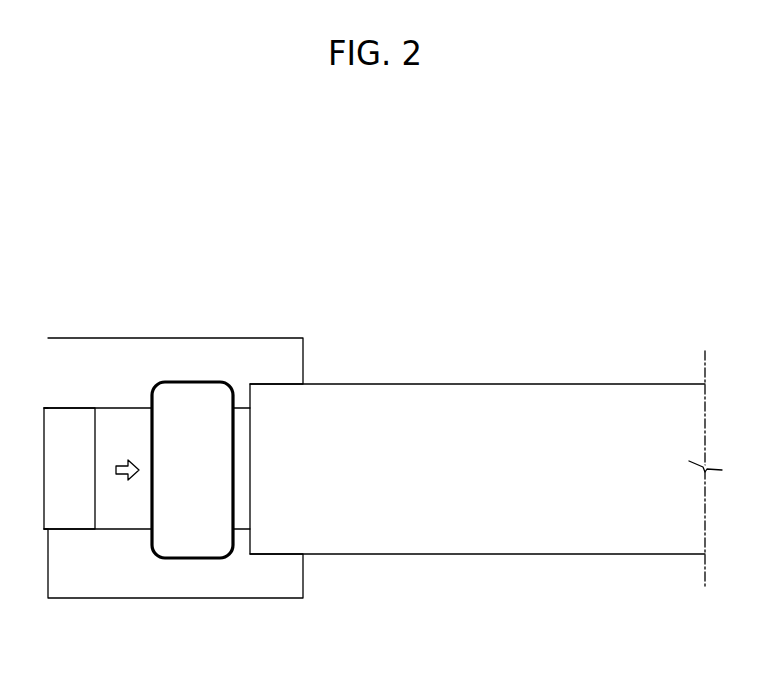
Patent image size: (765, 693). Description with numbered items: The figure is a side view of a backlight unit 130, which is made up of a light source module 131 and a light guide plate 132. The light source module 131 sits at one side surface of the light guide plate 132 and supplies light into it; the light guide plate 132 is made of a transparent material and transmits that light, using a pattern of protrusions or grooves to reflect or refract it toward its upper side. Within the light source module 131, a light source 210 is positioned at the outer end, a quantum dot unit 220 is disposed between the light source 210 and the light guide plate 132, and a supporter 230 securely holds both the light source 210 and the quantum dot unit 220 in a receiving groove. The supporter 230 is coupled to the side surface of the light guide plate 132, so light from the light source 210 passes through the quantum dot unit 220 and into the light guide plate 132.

The backlight unit 130 is at (393, 217).
The light source module 131 is at (247, 322).
The light guide plate 132 is at (503, 362).
The light source 210 is at (77, 418).
The quantum dot unit 220 is at (193, 560).
The supporter 230 is at (154, 347).